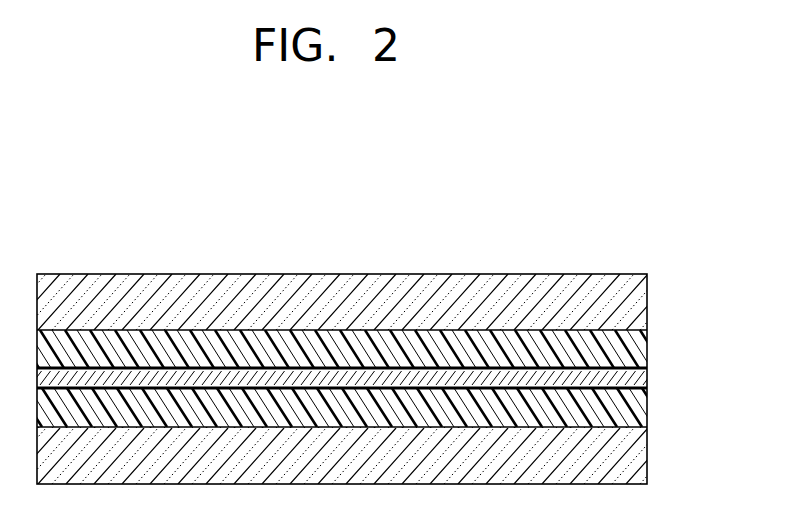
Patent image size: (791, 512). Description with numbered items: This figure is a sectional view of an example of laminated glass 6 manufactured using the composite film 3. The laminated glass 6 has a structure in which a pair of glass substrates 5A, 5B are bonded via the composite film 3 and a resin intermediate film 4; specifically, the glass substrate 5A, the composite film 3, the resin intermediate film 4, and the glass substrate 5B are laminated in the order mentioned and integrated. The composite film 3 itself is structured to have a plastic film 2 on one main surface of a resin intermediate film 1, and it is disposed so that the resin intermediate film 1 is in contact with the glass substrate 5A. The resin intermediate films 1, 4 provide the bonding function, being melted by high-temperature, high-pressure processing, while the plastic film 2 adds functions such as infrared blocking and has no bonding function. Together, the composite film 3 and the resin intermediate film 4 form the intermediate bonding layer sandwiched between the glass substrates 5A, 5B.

The resin intermediate film 1 is at (632, 403).
The plastic film 2 is at (633, 381).
The composite film 3 is at (398, 398).
The resin intermediate film 4 is at (633, 350).
The glass substrate 5A is at (633, 460).
The glass substrate 5B is at (640, 301).
The laminated glass 6 is at (568, 192).